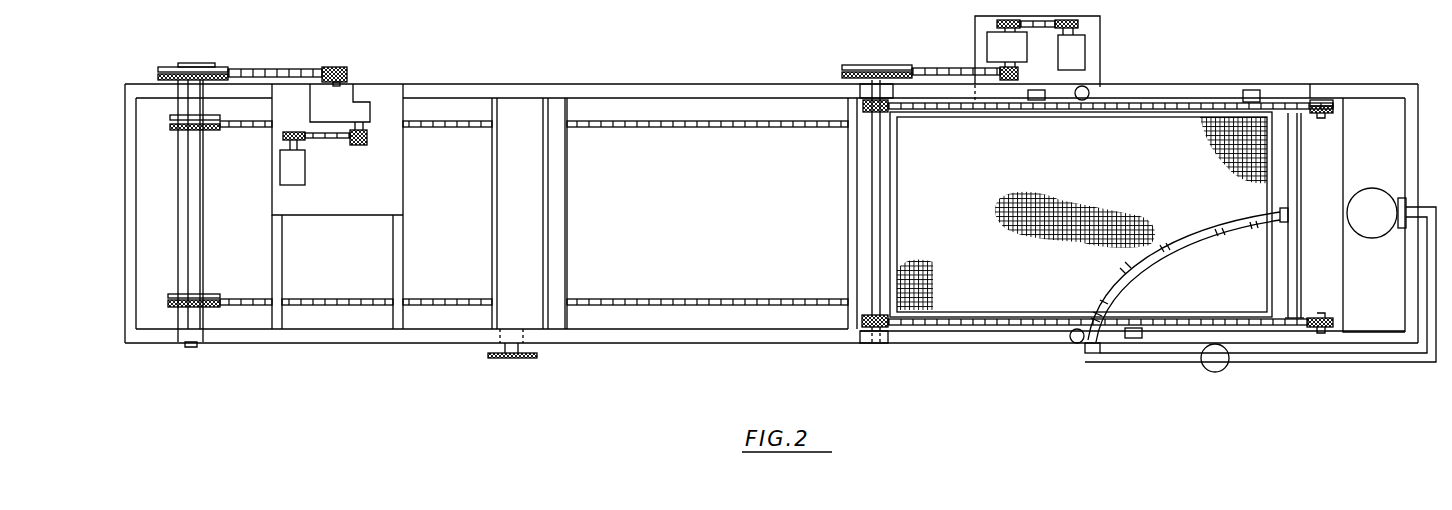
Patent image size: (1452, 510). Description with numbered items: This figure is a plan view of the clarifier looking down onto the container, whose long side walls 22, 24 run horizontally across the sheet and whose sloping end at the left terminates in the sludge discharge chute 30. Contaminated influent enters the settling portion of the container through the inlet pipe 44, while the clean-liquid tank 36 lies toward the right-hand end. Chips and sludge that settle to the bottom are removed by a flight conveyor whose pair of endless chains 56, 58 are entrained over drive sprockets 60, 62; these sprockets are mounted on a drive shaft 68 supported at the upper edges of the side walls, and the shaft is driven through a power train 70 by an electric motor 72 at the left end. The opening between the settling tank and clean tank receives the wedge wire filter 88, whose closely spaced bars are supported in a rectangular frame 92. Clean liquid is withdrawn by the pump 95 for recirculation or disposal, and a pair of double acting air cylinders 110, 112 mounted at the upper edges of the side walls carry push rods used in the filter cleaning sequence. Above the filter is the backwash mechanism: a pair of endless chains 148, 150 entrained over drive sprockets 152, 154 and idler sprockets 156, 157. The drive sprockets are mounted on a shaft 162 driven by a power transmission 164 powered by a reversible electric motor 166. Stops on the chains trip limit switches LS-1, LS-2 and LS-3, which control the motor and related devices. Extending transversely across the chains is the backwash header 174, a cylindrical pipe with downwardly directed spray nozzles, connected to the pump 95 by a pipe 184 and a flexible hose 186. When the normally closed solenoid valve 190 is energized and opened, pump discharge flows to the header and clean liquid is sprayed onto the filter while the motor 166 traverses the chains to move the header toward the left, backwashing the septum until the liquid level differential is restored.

The side wall 22 is at (677, 74).
The side wall 24 is at (707, 333).
The sludge discharge chute 30 is at (155, 317).
The clean-liquid tank 36 is at (848, 205).
The inlet pipe 44 is at (517, 362).
The endless chain 56 is at (248, 127).
The endless chain 58 is at (253, 297).
The drive sprocket 60 is at (177, 123).
The drive sprocket 62 is at (210, 307).
The drive shaft 68 is at (192, 232).
The power train 70 is at (317, 92).
The electric motor 72 is at (305, 175).
The wedge wire filter 88 is at (1193, 163).
The rectangular frame 92 is at (1157, 115).
The pump 95 is at (1377, 223).
The double acting air cylinder 110 is at (1075, 343).
The double acting air cylinder 112 is at (1087, 86).
The endless chain 148 is at (983, 323).
The endless chain 150 is at (1190, 103).
The drive sprocket 152 is at (868, 345).
The drive sprocket 154 is at (865, 108).
The idler sprocket 156 is at (1327, 330).
The idler sprocket 157 is at (1323, 102).
The shaft 162 is at (875, 250).
The power transmission 164 is at (960, 72).
The reversible electric motor 166 is at (1087, 44).
The backwash header 174 is at (1293, 183).
The pipe 184 is at (1432, 368).
The flexible hose 186 is at (1203, 235).
The solenoid valve 190 is at (1215, 365).
The limit switch LS-1 is at (1036, 100).
The limit switch LS-2 is at (1253, 92).
The limit switch LS-3 is at (1132, 338).